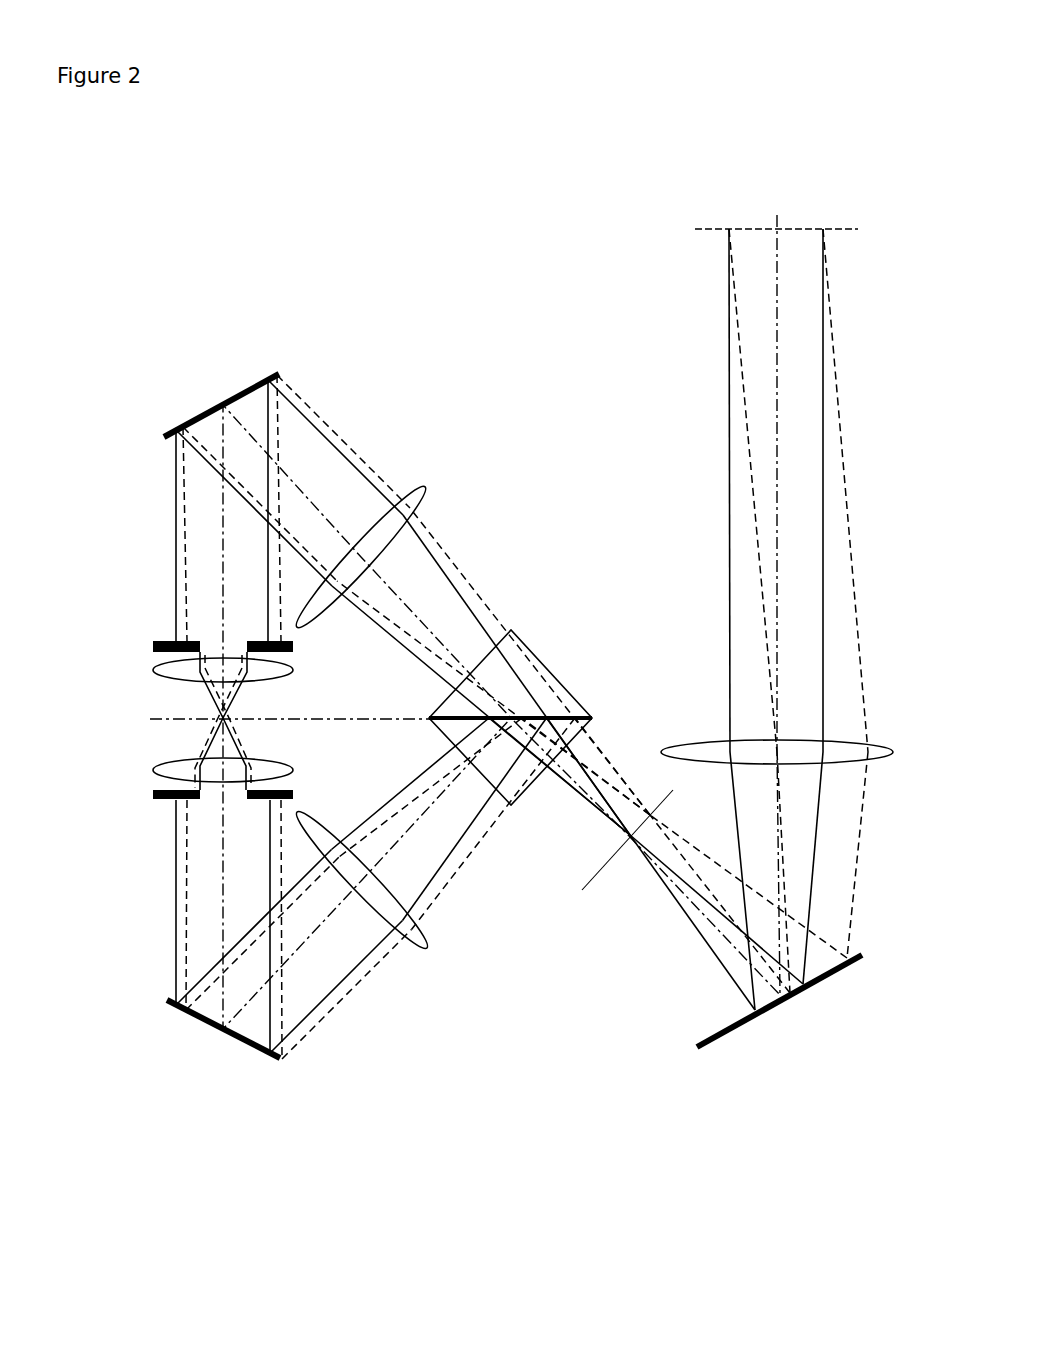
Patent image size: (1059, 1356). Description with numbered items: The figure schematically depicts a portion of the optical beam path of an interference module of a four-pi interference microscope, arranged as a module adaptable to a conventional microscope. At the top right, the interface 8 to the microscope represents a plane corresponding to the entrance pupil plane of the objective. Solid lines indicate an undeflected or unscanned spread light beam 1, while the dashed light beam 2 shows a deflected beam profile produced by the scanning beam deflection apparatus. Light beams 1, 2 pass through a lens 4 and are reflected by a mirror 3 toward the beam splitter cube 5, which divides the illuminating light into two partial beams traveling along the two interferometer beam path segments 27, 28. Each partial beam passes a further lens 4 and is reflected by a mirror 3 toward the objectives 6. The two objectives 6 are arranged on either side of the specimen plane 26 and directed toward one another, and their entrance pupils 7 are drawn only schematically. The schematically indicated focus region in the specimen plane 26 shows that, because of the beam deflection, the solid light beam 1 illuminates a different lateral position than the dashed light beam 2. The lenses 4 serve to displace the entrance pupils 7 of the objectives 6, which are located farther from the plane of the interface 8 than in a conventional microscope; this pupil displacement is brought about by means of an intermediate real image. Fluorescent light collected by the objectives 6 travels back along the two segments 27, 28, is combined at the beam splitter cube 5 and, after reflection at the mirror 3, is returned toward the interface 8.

The undeflected light beam 1 is at (709, 263).
The deflected light beam 2 is at (834, 432).
The mirror 3 is at (234, 374).
The lens 4 is at (418, 460).
The beam splitter cube 5 is at (536, 618).
The objective 6 is at (133, 666).
The entrance pupil 7 is at (133, 629).
The interface to the microscope 8 is at (717, 212).
The specimen plane 26 is at (156, 720).
The interferometer beam path segment 27 is at (329, 953).
The interferometer beam path segment 28 is at (328, 486).